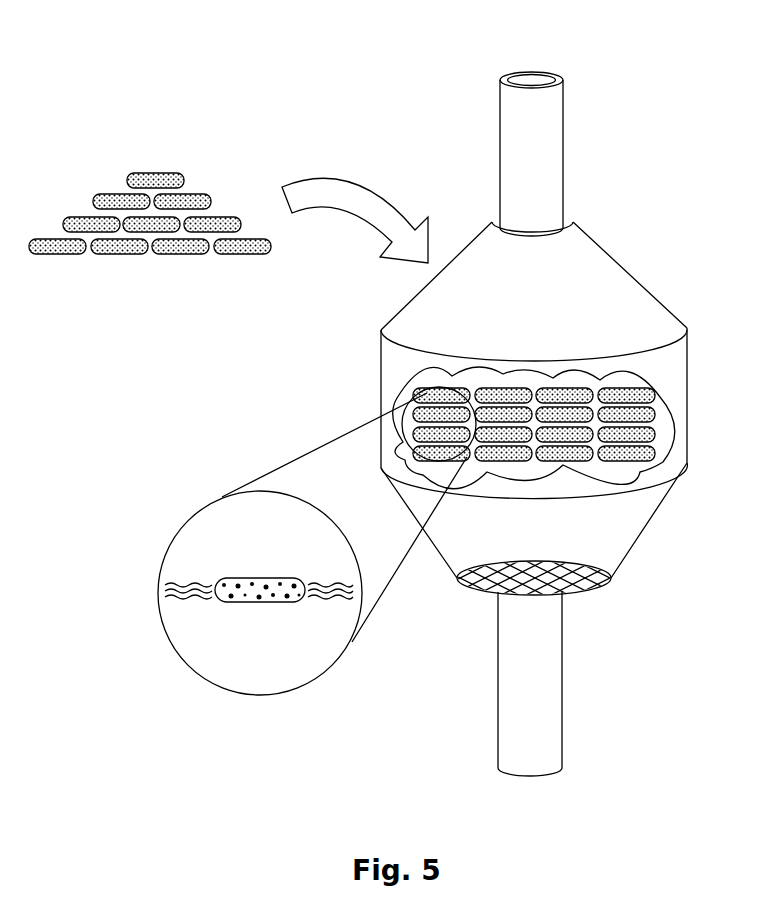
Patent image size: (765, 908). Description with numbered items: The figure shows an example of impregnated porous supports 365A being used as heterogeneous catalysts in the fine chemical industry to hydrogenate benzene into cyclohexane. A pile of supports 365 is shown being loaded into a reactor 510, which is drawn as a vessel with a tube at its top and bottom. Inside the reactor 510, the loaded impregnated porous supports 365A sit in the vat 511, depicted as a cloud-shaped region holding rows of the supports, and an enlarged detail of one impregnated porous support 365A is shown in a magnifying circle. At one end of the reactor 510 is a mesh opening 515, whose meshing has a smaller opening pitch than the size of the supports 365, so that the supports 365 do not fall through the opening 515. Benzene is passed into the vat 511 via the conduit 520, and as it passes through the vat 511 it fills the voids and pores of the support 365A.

The reactor 510 is at (653, 120).
The vat 511 is at (395, 384).
The supports 365 is at (150, 262).
The impregnated porous support 365A is at (652, 410).
The mesh opening 515 is at (538, 594).
The conduit 520 is at (563, 717).